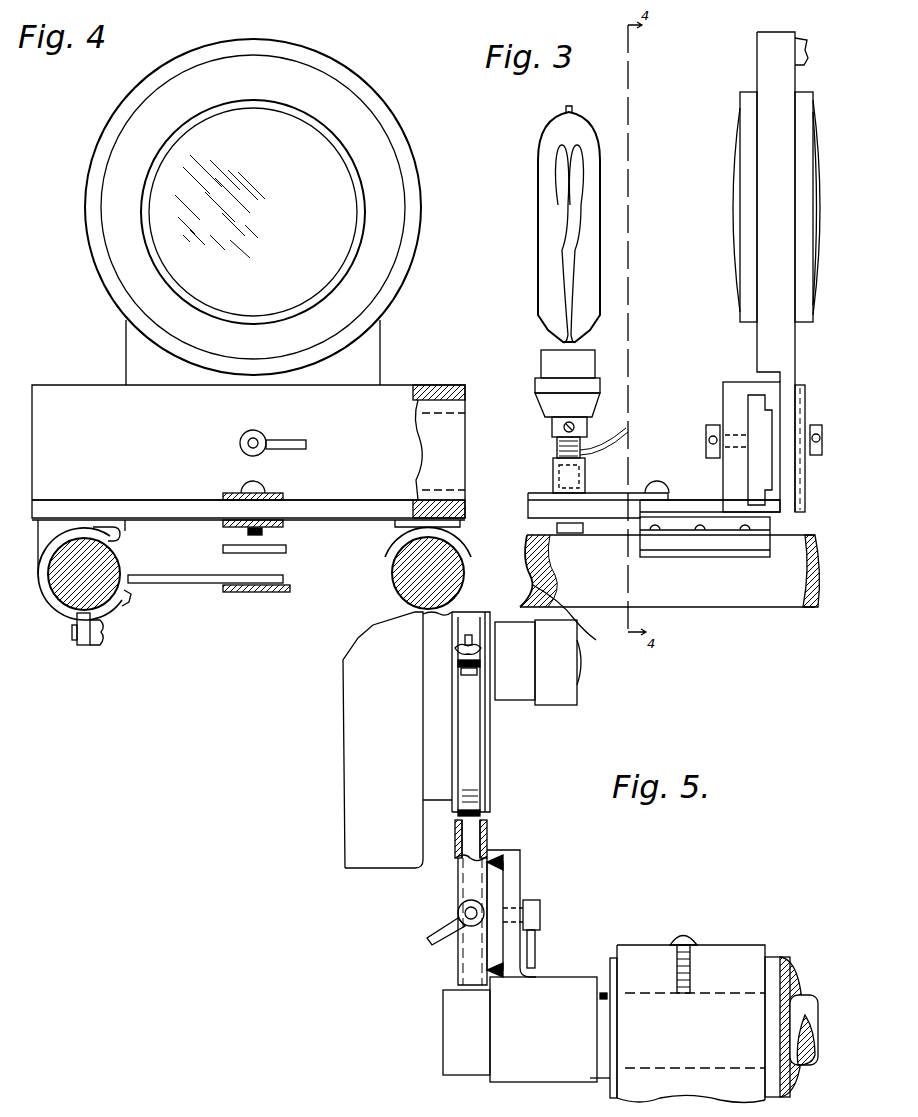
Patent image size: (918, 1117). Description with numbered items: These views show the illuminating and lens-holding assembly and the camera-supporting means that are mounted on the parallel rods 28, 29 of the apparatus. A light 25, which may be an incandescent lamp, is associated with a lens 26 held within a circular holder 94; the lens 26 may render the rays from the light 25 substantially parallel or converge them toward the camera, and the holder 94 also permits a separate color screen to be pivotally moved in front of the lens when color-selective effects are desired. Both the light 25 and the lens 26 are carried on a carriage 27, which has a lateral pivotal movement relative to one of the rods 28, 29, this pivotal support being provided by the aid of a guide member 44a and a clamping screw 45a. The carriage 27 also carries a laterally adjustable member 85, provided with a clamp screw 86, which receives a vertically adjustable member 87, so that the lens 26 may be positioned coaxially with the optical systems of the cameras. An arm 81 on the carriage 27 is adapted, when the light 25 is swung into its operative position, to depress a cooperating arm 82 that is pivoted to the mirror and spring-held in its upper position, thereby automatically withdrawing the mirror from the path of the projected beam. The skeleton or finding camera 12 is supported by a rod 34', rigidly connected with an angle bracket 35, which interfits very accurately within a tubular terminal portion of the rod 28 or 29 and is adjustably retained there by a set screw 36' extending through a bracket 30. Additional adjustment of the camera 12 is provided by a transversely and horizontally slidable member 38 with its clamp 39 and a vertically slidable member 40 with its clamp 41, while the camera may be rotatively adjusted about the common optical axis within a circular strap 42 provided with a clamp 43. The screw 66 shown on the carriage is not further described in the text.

In FIG. 5, the skeleton camera 12 is at (397, 740).
In FIG. 3, the light 25 is at (540, 236).
In FIG. 4, the lens 26 is at (253, 212).
In FIG. 3, the lens 26 is at (737, 172).
In FIG. 4, the carriage 27 is at (368, 505).
In FIG. 3, the carriage 27 is at (683, 500).
In FIG. 4, the rod 28 is at (445, 578).
In FIG. 3, the rod 28 is at (681, 590).
In FIG. 4, the rod 29 is at (84, 588).
In FIG. 3, the rod 29 is at (575, 619).
In FIG. 5, the bracket 30 is at (660, 1112).
In FIG. 5, the rod 34' is at (632, 946).
In FIG. 5, the angle bracket 35 is at (538, 995).
In FIG. 5, the set screw 36' is at (700, 948).
In FIG. 5, the transversely slidable member 38 is at (458, 893).
In FIG. 5, the clamp 39 is at (533, 910).
In FIG. 5, the vertically slidable member 40 is at (487, 822).
In FIG. 5, the clamp 41 is at (468, 925).
In FIG. 5, the circular strap 42 is at (470, 627).
In FIG. 5, the clamp 43 is at (480, 650).
In FIG. 4, the guide member 44a is at (120, 598).
In FIG. 3, the guide member 44a is at (720, 540).
In FIG. 4, the clamping screw 45a is at (105, 640).
In FIG. 4, the screw 66 is at (262, 436).
In FIG. 3, the screw 66 is at (817, 455).
In FIG. 4, the arm 81 is at (250, 580).
In FIG. 4, the cooperating arm 82 is at (272, 594).
In FIG. 4, the laterally adjustable member 85 is at (248, 451).
In FIG. 3, the laterally adjustable member 85 is at (737, 392).
In FIG. 3, the clamp screw 86 is at (712, 428).
In FIG. 4, the vertically adjustable member 87 is at (372, 348).
In FIG. 3, the vertically adjustable member 87 is at (785, 372).
In FIG. 4, the circular holder 94 is at (345, 78).
In FIG. 3, the circular holder 94 is at (763, 90).